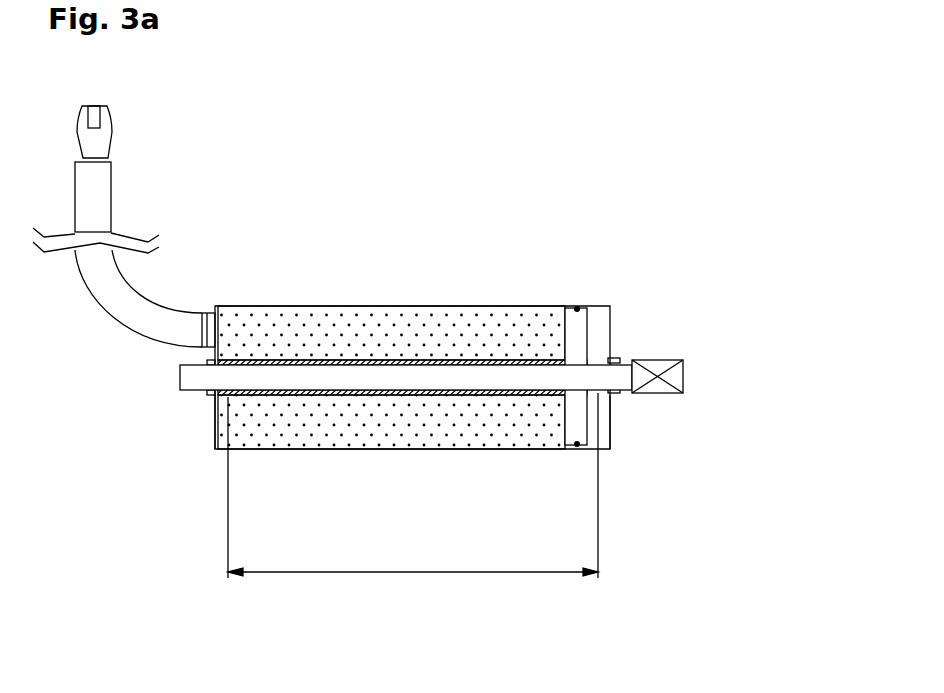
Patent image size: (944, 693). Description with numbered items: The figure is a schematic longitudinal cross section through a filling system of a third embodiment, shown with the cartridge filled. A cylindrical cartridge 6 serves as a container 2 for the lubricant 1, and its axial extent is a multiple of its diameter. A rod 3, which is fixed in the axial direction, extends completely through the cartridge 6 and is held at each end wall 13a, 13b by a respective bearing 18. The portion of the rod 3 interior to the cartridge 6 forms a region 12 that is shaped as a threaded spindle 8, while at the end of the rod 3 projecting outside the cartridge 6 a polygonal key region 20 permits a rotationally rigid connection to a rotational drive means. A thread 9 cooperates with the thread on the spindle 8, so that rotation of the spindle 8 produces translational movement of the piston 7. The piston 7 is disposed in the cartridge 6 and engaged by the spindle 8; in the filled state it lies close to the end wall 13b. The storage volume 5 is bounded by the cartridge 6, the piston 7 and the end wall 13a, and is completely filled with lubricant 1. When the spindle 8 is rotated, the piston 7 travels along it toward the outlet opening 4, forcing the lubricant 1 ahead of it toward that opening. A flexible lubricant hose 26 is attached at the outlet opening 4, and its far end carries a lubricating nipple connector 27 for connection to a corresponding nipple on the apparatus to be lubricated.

The lubricant 1 is at (370, 432).
The container 2 is at (432, 258).
The rod 3 is at (658, 322).
The outlet opening 4 is at (207, 306).
The storage volume 5 is at (470, 428).
The cartridge 6 is at (335, 306).
The piston 7 is at (575, 427).
The threaded spindle 8 is at (291, 396).
The thread 9 is at (575, 358).
The region 12 is at (402, 573).
The end wall 13a is at (230, 442).
The end wall 13b is at (611, 425).
The bearing 18 is at (207, 397).
The polygonal key region 20 is at (686, 367).
The lubricant hose 26 is at (112, 215).
The lubricating nipple connector 27 is at (113, 130).